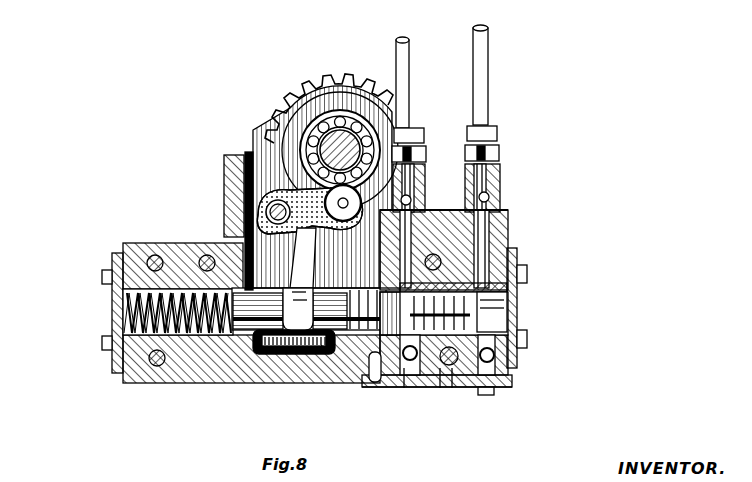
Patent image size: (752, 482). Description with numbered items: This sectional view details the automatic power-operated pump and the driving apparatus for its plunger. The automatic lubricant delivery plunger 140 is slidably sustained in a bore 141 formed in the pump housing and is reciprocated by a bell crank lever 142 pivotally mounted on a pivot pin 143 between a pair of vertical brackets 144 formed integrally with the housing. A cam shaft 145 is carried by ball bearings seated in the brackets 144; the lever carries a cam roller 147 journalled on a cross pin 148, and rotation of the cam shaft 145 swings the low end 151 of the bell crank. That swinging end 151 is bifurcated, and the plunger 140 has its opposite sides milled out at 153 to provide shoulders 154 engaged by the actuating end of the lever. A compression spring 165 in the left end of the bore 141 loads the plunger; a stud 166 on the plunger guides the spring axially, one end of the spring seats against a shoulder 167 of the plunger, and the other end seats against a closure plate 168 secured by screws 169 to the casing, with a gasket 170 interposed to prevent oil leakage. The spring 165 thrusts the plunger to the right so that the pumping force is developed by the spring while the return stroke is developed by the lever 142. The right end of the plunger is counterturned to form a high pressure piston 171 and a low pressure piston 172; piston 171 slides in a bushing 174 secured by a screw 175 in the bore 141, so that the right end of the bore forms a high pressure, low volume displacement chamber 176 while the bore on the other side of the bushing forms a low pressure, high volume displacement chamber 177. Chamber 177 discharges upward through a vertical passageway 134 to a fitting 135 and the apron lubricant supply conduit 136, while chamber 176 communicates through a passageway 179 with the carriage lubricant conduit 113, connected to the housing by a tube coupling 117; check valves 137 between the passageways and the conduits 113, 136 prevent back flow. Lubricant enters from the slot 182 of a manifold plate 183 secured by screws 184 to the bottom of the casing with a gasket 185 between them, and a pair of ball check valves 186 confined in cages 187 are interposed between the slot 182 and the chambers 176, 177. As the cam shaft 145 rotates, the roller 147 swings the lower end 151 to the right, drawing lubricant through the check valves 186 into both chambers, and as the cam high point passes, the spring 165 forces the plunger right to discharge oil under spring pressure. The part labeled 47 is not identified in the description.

The housing 47 is at (293, 137).
The carriage lubricant conduit 113 is at (481, 100).
The tube coupling 117 is at (492, 150).
The vertical passageway 134 is at (430, 226).
The fitting 135 is at (417, 150).
The apron lubricant supply conduit 136 is at (400, 100).
The check valves 137 is at (418, 186).
The automatic lubricant delivery plunger 140 is at (276, 340).
The bore 141 is at (496, 322).
The bell crank lever 142 is at (265, 238).
The pivot pin 143 is at (266, 210).
The vertical brackets 144 is at (270, 124).
The cam shaft 145 is at (345, 150).
The cam roller 147 is at (333, 128).
The cross pin 148 is at (340, 203).
The low end of bell crank lever 151 is at (297, 352).
The milled out sides of plunger 153 is at (322, 350).
The shoulders 154 is at (290, 354).
The compression spring 165 is at (123, 374).
The stud 166 is at (185, 333).
The shoulder of plunger 167 is at (232, 334).
The closure plate 168 is at (112, 318).
The screws 169 is at (102, 278).
The gasket 170 is at (121, 243).
The high pressure piston 171 is at (464, 390).
The low pressure piston 172 is at (404, 388).
The bushing 174 is at (517, 262).
The screw 175 is at (452, 388).
The high pressure, low volume displacement chamber 176 is at (490, 326).
The low pressure, high volume displacement chamber 177 is at (440, 388).
The passageway 179 is at (512, 242).
The slot 182 is at (478, 400).
The manifold plate 183 is at (512, 396).
The screws 184 is at (500, 398).
The gasket 185 is at (512, 382).
The ball check valves 186 is at (496, 372).
The cages 187 is at (525, 349).